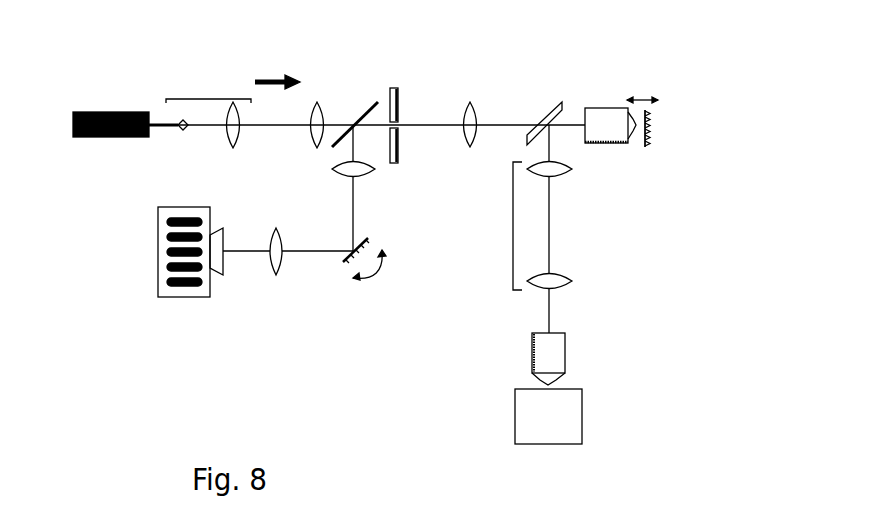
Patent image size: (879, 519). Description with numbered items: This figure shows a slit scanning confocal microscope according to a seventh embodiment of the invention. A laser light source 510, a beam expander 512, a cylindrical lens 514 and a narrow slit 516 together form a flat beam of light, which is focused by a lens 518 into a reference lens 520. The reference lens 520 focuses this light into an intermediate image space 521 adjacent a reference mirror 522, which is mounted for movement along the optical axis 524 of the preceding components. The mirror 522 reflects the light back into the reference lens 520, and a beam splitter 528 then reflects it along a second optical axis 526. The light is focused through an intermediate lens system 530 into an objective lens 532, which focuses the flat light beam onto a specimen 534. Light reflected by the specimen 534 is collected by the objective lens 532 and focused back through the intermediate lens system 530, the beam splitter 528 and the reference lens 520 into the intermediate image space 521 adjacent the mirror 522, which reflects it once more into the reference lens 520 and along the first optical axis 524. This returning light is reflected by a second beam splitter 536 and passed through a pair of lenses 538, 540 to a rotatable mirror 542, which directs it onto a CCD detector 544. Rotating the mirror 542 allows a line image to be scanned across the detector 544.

The laser light source 510 is at (95, 110).
The beam expander 512 is at (192, 98).
The cylindrical lens 514 is at (315, 110).
The narrow slit 516 is at (397, 90).
The lens 518 is at (472, 110).
The reference lens 520 is at (618, 143).
The intermediate image space 521 is at (643, 132).
The reference mirror 522 is at (647, 145).
The optical axis 524 is at (437, 125).
The second optical axis 526 is at (549, 302).
The beam splitter 528 is at (562, 102).
The intermediate lens system 530 is at (512, 242).
The objective lens 532 is at (532, 348).
The specimen 534 is at (523, 430).
The second beam splitter 536 is at (368, 107).
The lens 538 is at (370, 175).
The lens 540 is at (275, 230).
The rotatable mirror 542 is at (342, 265).
The CCD detector 544 is at (188, 298).